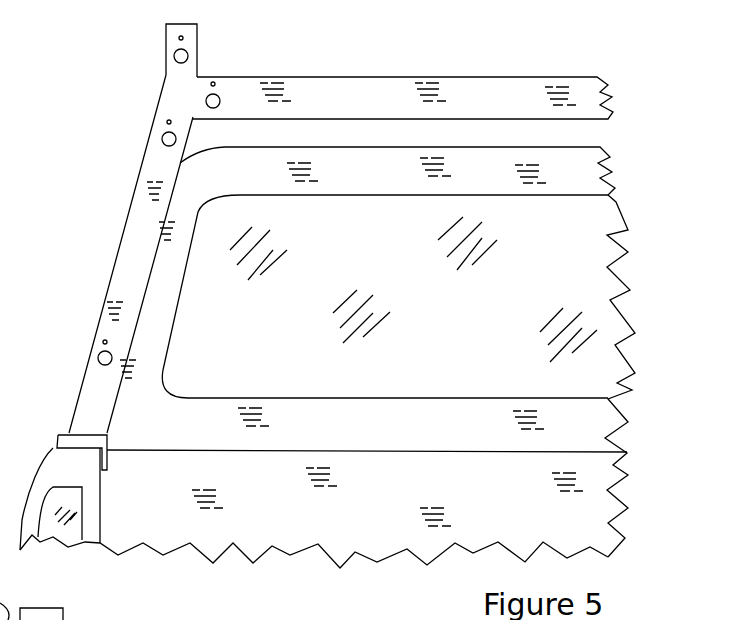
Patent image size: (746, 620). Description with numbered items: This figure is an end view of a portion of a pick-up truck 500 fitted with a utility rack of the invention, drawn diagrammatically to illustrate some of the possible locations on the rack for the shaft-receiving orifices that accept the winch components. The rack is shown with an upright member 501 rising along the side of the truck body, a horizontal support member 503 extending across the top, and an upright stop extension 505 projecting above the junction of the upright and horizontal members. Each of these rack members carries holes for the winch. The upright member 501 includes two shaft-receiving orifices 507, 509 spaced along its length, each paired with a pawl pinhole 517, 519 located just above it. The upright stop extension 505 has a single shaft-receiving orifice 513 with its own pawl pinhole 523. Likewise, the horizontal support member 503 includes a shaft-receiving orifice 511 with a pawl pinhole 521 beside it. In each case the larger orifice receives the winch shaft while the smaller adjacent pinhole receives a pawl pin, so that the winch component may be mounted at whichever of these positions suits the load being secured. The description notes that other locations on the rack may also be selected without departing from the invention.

The pick-up truck 500 is at (563, 170).
The upright member 501 is at (133, 222).
The horizontal support member 503 is at (378, 95).
The upright stop extension 505 is at (196, 43).
The shaft-receiving orifice 507 is at (98, 358).
The shaft-receiving orifice 509 is at (162, 141).
The shaft-receiving orifice 511 is at (205, 102).
The shaft-receiving orifice 513 is at (174, 54).
The pawl pinhole 517 is at (101, 342).
The pawl pinhole 519 is at (165, 123).
The pawl pinhole 521 is at (217, 83).
The pawl pinhole 523 is at (176, 37).